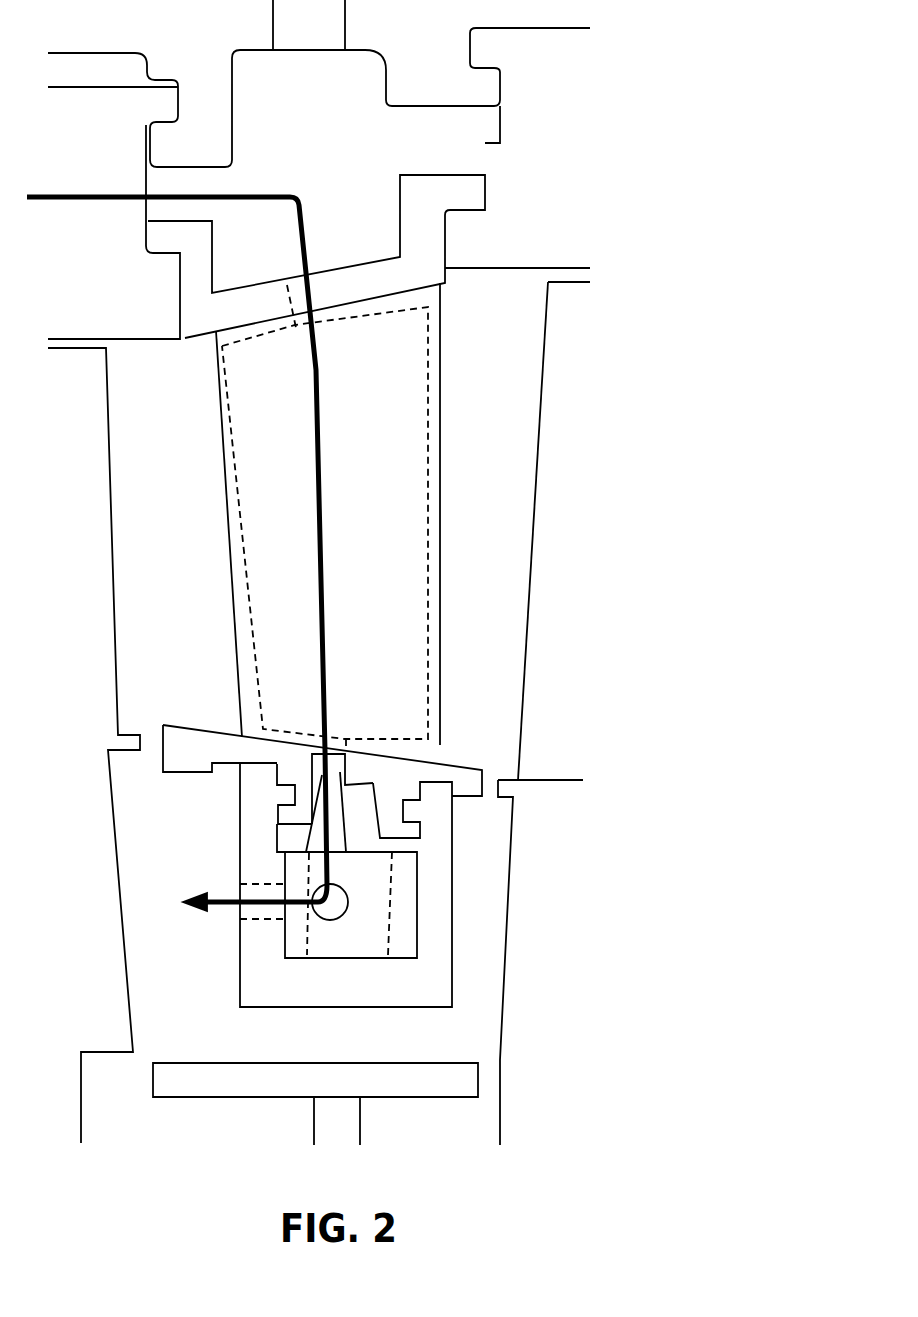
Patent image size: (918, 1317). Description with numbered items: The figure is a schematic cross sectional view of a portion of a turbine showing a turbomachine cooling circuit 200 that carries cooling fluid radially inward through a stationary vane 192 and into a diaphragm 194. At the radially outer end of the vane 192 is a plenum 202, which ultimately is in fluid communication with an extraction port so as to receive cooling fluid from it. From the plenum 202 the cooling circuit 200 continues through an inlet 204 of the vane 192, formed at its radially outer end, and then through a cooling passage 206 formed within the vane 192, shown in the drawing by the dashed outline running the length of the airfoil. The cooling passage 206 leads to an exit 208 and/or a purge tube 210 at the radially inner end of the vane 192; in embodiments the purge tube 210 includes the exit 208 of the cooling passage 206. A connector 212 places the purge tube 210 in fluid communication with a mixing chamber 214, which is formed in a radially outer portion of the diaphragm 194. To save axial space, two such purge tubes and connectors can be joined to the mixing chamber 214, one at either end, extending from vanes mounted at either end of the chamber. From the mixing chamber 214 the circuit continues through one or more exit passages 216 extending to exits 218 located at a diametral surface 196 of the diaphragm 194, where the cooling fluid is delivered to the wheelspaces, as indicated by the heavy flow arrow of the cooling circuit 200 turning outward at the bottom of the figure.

The vane 192 is at (440, 430).
The diaphragm 194 is at (288, 983).
The diametral surface 196 is at (213, 848).
The turbomachine cooling circuit 200 is at (76, 195).
The plenum 202 is at (268, 85).
The inlet 204 is at (340, 321).
The cooling passage 206 is at (428, 513).
The exit 208 is at (345, 746).
The purge tube 210 is at (347, 790).
The connector 212 is at (348, 867).
The mixing chamber 214 is at (403, 897).
The exit passage 216 is at (260, 922).
The exit 218 is at (237, 912).